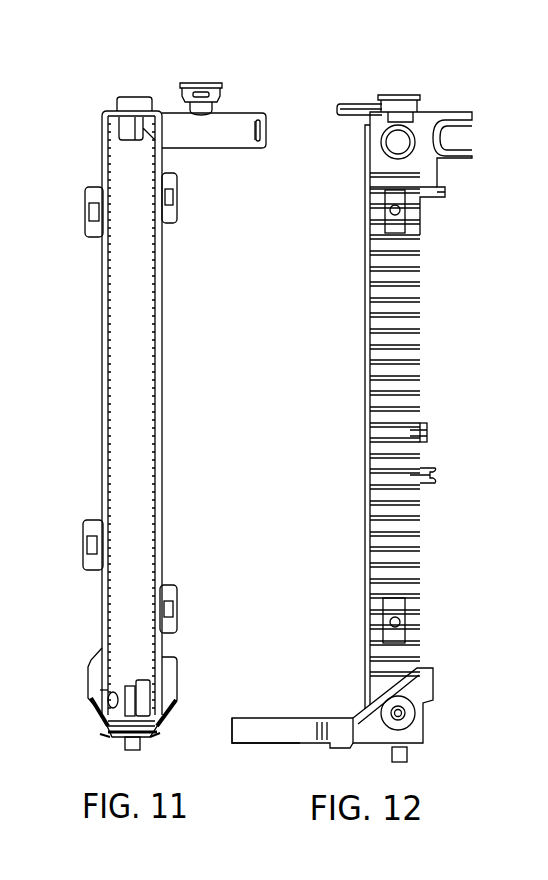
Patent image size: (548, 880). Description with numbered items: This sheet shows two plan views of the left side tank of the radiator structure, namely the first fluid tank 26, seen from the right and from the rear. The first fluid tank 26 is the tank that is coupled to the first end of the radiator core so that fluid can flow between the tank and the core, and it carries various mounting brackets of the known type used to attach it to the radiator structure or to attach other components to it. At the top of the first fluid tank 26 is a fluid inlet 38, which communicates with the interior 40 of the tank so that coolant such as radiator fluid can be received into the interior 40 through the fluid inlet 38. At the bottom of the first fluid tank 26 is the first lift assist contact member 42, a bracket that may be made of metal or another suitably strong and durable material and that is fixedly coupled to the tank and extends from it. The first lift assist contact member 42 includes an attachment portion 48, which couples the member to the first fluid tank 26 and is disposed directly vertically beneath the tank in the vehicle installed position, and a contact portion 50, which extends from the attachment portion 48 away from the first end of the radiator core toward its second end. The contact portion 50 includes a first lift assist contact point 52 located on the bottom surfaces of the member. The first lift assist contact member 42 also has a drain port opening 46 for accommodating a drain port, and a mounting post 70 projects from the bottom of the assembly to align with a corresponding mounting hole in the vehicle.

In FIG. 11, the first fluid tank 26 is at (144, 410).
In FIG. 12, the first fluid tank 26 is at (367, 418).
In FIG. 11, the fluid inlet 38 is at (214, 85).
In FIG. 12, the fluid inlet 38 is at (415, 94).
In FIG. 11, the interior 40 is at (138, 412).
In FIG. 11, the first lift assist contact member 42 is at (119, 715).
In FIG. 12, the first lift assist contact member 42 is at (365, 724).
In FIG. 12, the drain port opening 46 is at (407, 715).
In FIG. 12, the attachment portion 48 is at (375, 732).
In FIG. 11, the contact portion 50 is at (96, 719).
In FIG. 12, the contact portion 50 is at (297, 732).
In FIG. 11, the first lift assist contact point 52 is at (105, 737).
In FIG. 12, the first lift assist contact point 52 is at (265, 744).
In FIG. 11, the mounting post 70 is at (143, 745).
In FIG. 12, the mounting post 70 is at (402, 753).